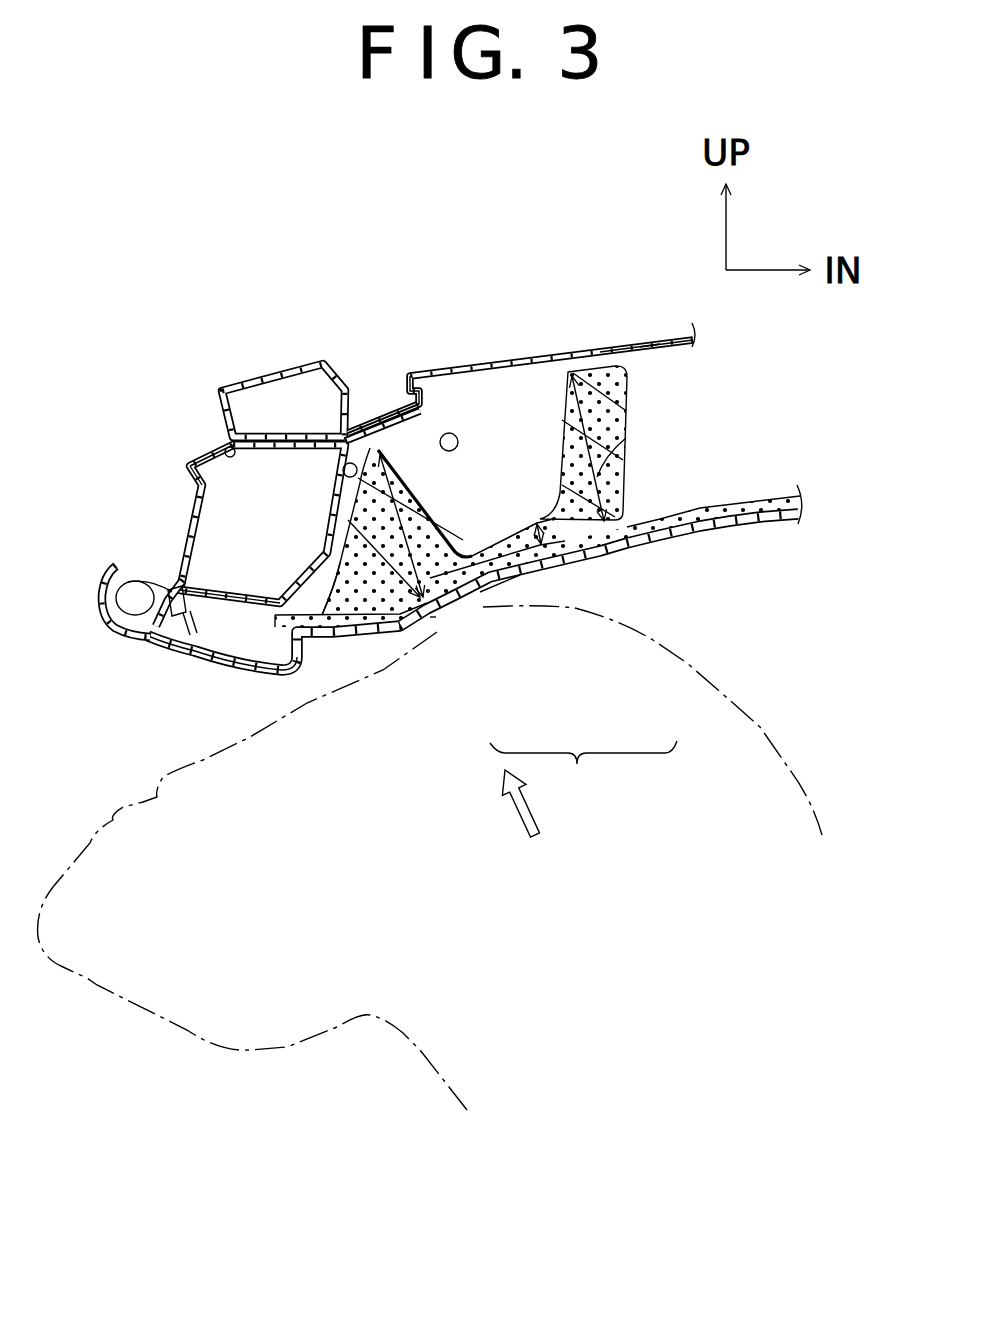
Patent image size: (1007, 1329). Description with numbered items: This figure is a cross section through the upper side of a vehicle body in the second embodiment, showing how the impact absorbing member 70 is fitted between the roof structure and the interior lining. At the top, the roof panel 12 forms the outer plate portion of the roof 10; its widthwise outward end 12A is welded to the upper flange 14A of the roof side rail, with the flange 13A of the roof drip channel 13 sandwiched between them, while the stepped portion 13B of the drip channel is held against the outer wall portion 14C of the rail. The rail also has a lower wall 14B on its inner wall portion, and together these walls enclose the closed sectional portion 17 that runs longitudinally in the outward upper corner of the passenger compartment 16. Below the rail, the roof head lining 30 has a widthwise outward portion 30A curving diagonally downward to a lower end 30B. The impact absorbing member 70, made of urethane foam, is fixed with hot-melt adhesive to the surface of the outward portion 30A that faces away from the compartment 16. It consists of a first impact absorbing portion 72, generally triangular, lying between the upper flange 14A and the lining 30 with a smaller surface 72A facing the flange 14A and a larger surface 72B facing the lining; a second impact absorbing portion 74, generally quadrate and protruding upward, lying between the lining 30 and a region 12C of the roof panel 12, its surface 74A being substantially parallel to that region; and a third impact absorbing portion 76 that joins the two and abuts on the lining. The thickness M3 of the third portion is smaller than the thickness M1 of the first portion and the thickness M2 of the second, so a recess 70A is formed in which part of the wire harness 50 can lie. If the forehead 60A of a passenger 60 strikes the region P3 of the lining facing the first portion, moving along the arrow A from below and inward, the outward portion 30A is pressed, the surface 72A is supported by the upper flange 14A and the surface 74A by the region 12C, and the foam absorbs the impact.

The roof 10 is at (660, 336).
The roof panel 12 is at (540, 357).
The widthwise outward end of roof panel 12A is at (381, 413).
The region of roof panel 12C is at (633, 350).
The roof drip channel 13 is at (287, 373).
The flange of roof drip channel 13A is at (355, 420).
The stepped portion of roof drip channel 13B is at (195, 460).
The upper flange of roof side rail 14A is at (433, 455).
The lower wall of inner wall portion 14B is at (287, 585).
The outer wall portion of roof side rail 14C is at (215, 440).
The passenger compartment 16 is at (771, 652).
The closed sectional portion 17 is at (237, 529).
The roof head lining 30 is at (742, 533).
The widthwise outward portion of roof head lining 30A is at (503, 600).
The lower end of roof head lining 30B is at (283, 632).
The wire harness 50 is at (342, 436).
The passenger 60 is at (812, 800).
The forehead of passenger 60A is at (483, 620).
The impact absorbing member 70 is at (583, 774).
The recess 70A is at (510, 428).
The first impact absorbing portion 72 is at (441, 603).
The surface facing upper flange 72A is at (405, 462).
The surface facing roof head lining 72B is at (377, 605).
The second impact absorbing portion 74 is at (627, 512).
The surface facing roof panel 74A is at (598, 368).
The third impact absorbing portion 76 is at (513, 550).
The thickness of first impact absorbing portion M1 is at (335, 510).
The thickness of second impact absorbing portion M2 is at (626, 445).
The thickness of third impact absorbing portion M3 is at (546, 542).
The region of roof head lining P3 is at (433, 618).
The arrow A is at (518, 812).